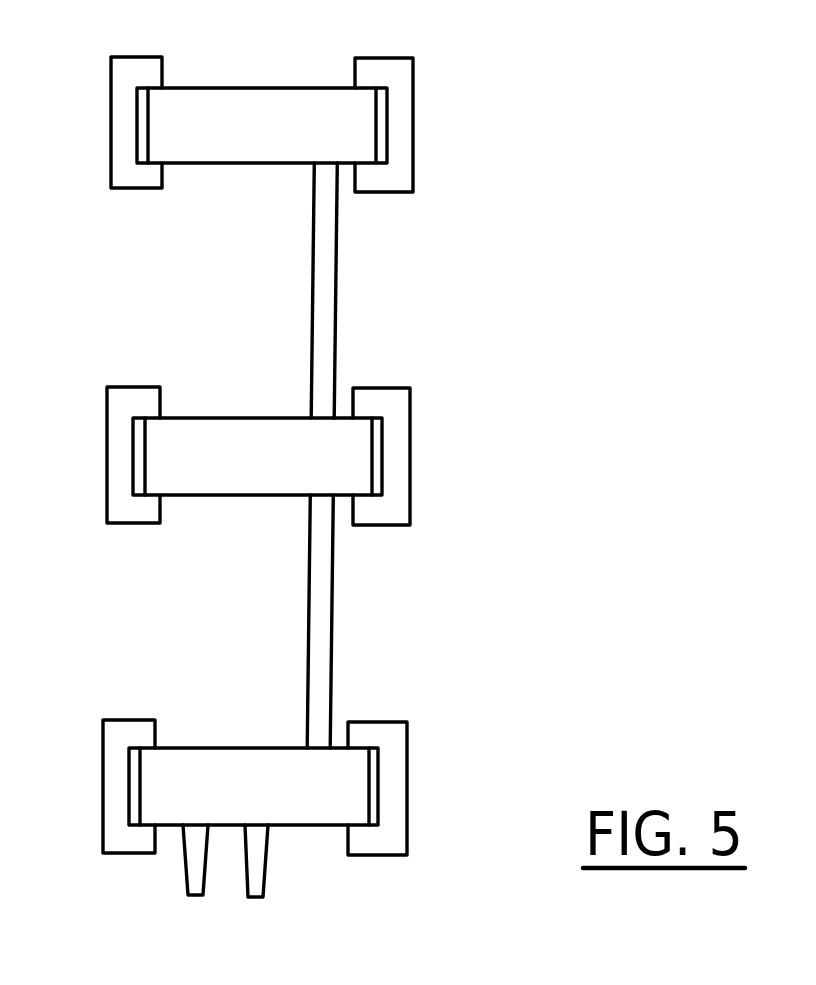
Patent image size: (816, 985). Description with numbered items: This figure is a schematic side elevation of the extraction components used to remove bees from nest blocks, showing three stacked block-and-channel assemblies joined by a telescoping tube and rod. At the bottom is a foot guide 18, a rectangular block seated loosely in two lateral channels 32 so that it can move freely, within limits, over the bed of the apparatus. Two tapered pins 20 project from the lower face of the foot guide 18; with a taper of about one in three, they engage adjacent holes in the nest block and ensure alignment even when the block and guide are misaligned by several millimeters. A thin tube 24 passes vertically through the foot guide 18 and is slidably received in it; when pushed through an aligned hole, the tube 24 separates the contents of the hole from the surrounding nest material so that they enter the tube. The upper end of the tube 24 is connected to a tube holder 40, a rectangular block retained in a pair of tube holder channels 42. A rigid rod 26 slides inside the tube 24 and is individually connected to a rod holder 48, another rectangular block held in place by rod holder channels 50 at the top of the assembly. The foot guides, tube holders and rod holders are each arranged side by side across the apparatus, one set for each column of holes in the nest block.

The foot guide 18 is at (233, 780).
The tapered pins 20 is at (257, 873).
The tube 24 is at (320, 620).
The rod 26 is at (323, 278).
The lateral channels 32 is at (118, 765).
The tube holder 40 is at (252, 445).
The tube holder channels 42 is at (120, 443).
The rod holder 48 is at (247, 113).
The rod holder channels 50 is at (123, 100).